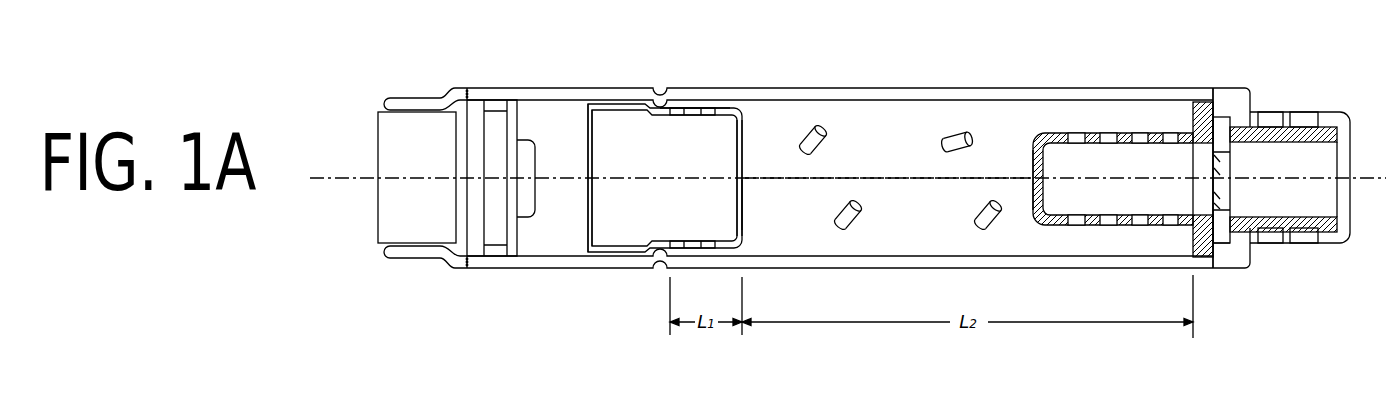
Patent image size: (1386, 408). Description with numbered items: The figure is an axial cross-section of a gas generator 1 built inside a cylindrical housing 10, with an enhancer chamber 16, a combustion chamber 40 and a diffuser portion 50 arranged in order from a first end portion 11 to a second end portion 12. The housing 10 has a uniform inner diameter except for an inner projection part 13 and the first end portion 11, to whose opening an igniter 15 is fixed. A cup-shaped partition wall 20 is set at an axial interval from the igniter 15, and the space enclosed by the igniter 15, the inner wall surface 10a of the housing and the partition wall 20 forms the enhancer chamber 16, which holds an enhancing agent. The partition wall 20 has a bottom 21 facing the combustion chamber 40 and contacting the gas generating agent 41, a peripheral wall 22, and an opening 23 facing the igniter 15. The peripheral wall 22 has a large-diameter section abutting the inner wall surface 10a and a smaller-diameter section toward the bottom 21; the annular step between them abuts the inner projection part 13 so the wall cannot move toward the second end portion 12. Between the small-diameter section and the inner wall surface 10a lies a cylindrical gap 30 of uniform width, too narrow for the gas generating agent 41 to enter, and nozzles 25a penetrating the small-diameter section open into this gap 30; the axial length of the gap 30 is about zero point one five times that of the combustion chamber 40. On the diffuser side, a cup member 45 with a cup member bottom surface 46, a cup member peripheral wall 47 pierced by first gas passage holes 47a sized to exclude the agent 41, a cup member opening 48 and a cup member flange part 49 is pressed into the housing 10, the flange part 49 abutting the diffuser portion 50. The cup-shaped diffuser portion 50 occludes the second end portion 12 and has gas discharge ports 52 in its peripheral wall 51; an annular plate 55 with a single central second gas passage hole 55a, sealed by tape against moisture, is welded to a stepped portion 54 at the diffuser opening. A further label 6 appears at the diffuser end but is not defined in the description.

The gas generator 1 is at (852, 58).
The gas discharge port 6 is at (1312, 137).
The cylindrical housing 10 is at (990, 88).
The inner wall surface 10a is at (907, 101).
The first end portion 11 is at (385, 99).
The second end portion 12 is at (1214, 93).
The inner projection part 13 is at (656, 241).
The igniter 15 is at (398, 216).
The enhancer chamber 16 is at (648, 161).
The cup-shaped partition wall 20 is at (748, 130).
The bottom 21 is at (746, 201).
The peripheral wall 22 is at (722, 106).
The opening 23 is at (588, 241).
The nozzles 25a is at (680, 240).
The cylindrical gap 30 is at (694, 102).
The combustion chamber 40 is at (873, 169).
The gas generating agent 41 is at (970, 149).
The cup member 45 is at (1040, 236).
The cup member bottom surface 46 is at (1030, 191).
The cup member peripheral wall 47 is at (1124, 132).
The first gas passage holes 47a is at (1106, 233).
The cup member opening 48 is at (1230, 204).
The cup member flange part 49 is at (1198, 106).
The diffuser portion 50 is at (1330, 103).
The peripheral wall 51 is at (1283, 244).
The gas discharge ports 52 is at (1271, 117).
The stepped portion 54 is at (1218, 246).
The annular plate 55 is at (1210, 150).
The second gas passage hole 55a is at (1232, 163).